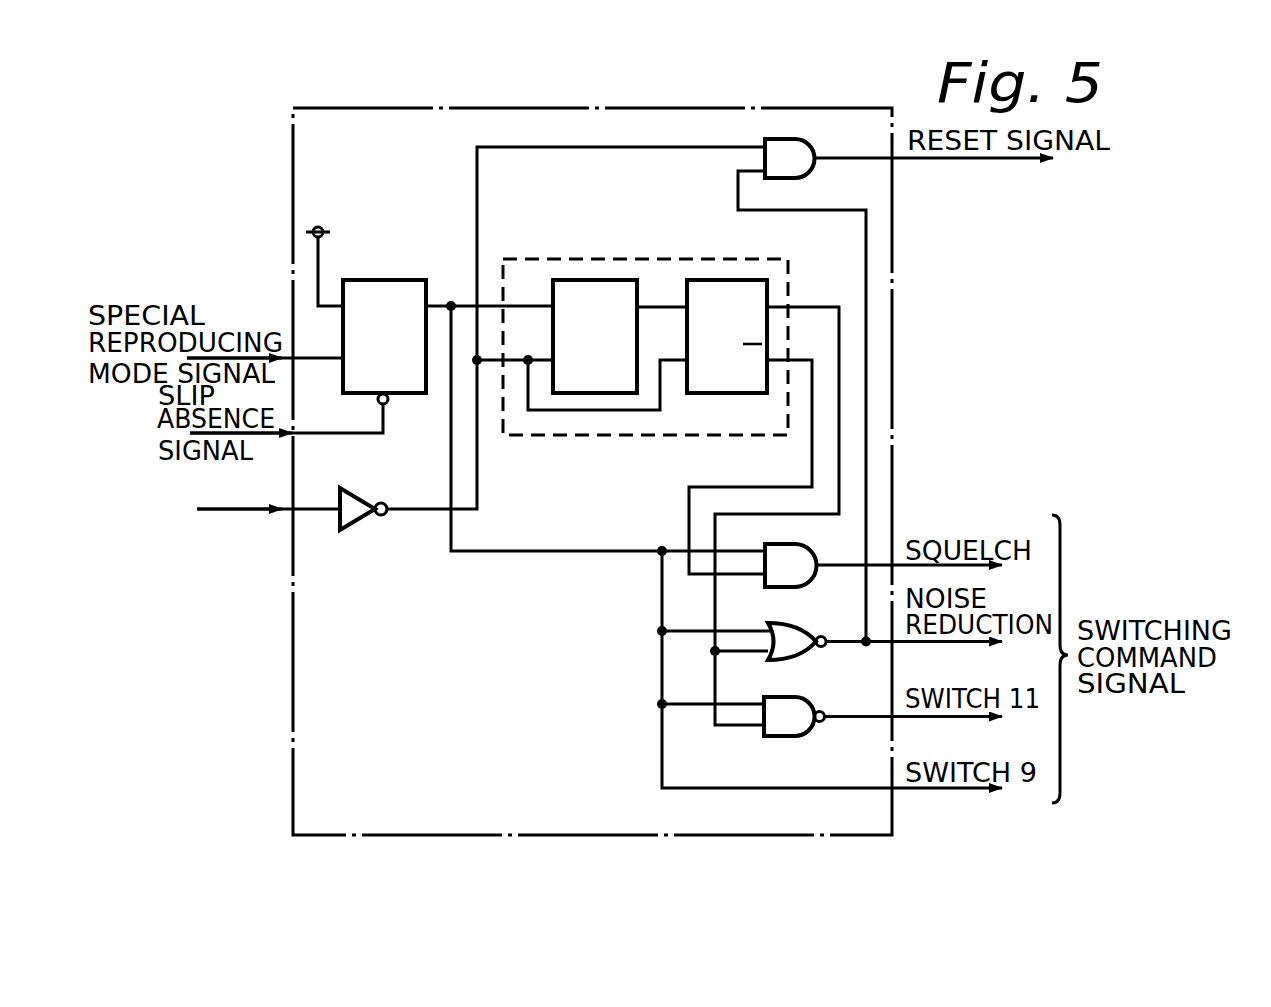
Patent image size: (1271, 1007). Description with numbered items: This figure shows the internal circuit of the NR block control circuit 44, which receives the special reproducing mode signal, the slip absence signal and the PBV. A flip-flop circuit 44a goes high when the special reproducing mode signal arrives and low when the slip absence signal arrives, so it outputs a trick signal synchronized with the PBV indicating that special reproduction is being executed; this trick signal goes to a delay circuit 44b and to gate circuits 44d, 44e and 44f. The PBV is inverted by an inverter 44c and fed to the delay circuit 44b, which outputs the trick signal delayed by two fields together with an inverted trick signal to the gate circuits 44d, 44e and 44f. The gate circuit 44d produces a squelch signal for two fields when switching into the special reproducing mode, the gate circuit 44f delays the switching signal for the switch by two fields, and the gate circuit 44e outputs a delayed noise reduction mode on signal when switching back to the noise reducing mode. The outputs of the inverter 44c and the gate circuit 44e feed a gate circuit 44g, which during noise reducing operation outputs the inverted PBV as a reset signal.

The NR block control circuit 44 is at (558, 108).
The flip-flop circuit 44a is at (391, 280).
The delay circuit 44b is at (640, 258).
The inverter 44c is at (363, 497).
The gate circuit 44d is at (800, 544).
The gate circuit 44e is at (812, 630).
The gate circuit 44f is at (800, 697).
The gate circuit 44g is at (826, 134).